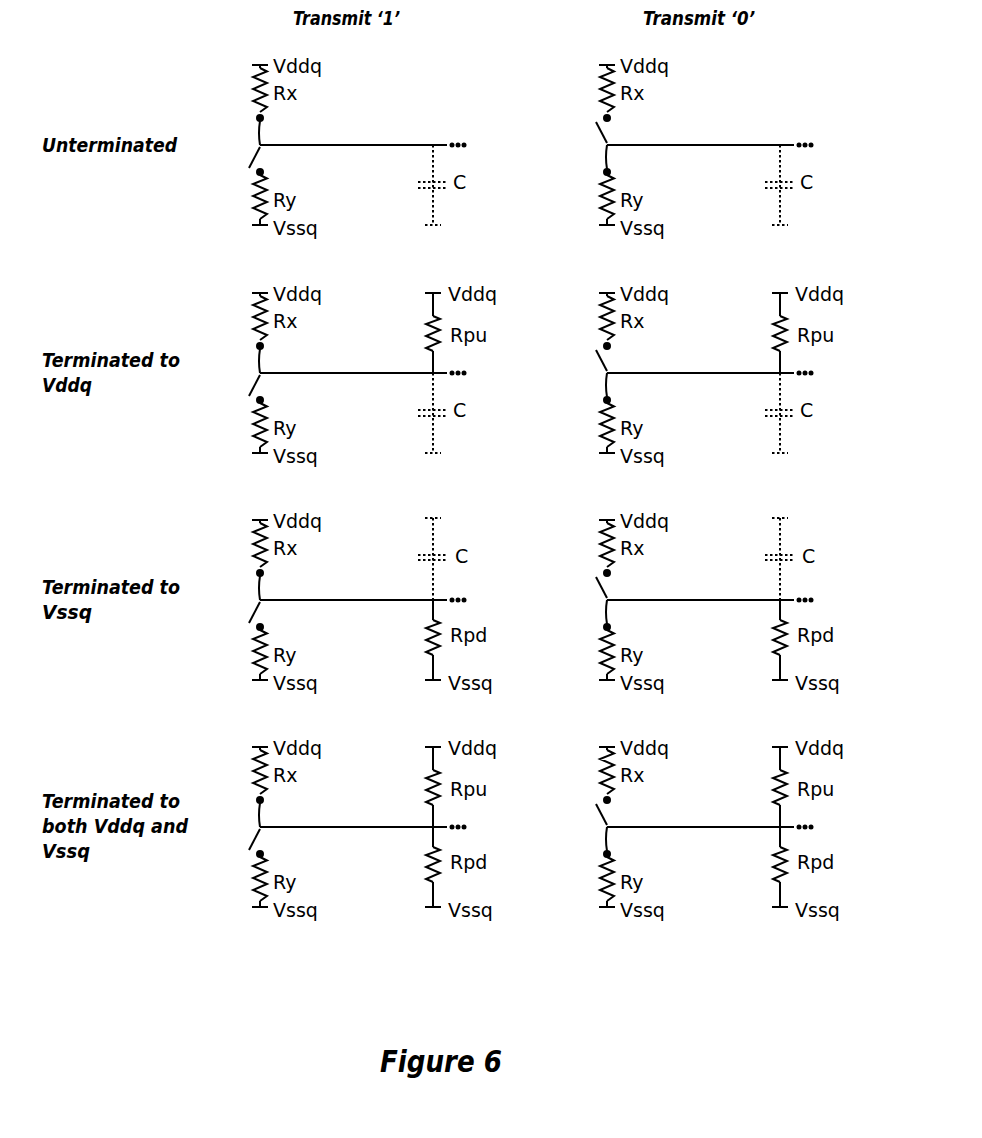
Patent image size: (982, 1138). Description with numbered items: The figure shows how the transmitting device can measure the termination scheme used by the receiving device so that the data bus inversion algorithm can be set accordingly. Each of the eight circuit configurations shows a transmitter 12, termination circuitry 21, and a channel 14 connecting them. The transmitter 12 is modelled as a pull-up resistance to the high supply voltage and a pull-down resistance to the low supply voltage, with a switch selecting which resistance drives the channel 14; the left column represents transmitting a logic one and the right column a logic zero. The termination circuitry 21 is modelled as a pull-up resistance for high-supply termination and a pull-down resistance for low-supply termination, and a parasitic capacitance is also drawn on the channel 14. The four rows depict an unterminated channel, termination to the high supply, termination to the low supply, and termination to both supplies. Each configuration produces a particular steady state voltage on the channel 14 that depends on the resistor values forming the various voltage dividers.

The channel 14 is at (537, 474).
The transmitter 12 is at (429, 854).
The termination circuitry 21 is at (606, 854).